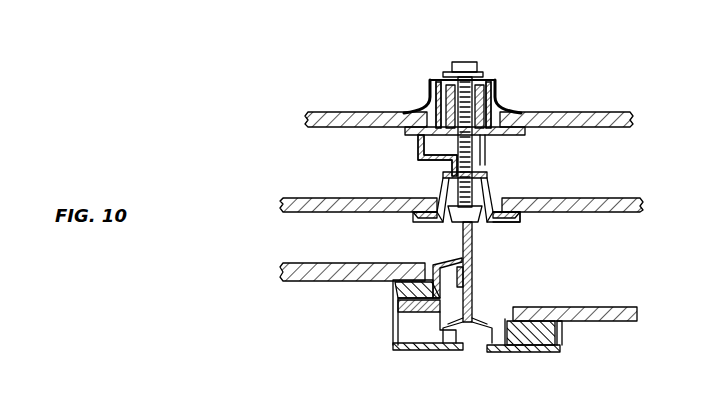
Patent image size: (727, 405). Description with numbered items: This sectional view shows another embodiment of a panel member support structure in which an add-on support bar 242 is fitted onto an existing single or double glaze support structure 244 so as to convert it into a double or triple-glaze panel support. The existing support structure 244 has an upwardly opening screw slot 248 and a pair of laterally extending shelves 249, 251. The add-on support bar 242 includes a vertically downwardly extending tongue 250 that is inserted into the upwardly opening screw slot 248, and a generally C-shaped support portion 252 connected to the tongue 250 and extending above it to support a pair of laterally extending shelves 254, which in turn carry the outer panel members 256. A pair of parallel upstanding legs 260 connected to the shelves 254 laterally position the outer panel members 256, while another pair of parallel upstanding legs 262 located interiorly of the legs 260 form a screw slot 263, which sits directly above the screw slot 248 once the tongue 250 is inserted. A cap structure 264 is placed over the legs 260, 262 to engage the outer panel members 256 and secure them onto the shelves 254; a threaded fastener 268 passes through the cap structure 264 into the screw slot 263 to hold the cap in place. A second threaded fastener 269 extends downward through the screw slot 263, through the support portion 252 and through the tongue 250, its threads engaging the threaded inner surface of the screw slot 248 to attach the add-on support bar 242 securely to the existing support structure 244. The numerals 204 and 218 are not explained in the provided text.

The panel 204 is at (330, 270).
The retaining bracket 218 is at (447, 259).
The add-on support bar 242 is at (410, 159).
The existing support structure 244 is at (480, 287).
The upwardly opening screw slot 248 is at (480, 218).
The laterally extending shelf 249 is at (516, 220).
The tongue 250 is at (452, 175).
The laterally extending shelf 251 is at (537, 339).
The C-shaped support portion 252 is at (420, 153).
The laterally extending shelves 254 is at (513, 131).
The outer panel members 256 is at (367, 114).
The upstanding legs 260 is at (425, 94).
The upstanding legs 262 is at (455, 75).
The screw slot 263 is at (499, 89).
The cap structure 264 is at (497, 85).
The threaded fastener 268 is at (469, 64).
The second threaded fastener 269 is at (472, 152).